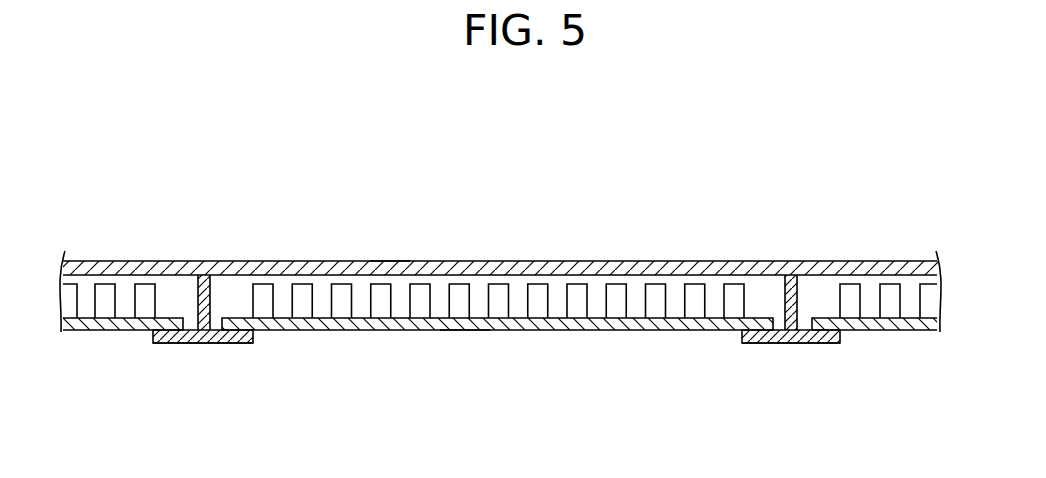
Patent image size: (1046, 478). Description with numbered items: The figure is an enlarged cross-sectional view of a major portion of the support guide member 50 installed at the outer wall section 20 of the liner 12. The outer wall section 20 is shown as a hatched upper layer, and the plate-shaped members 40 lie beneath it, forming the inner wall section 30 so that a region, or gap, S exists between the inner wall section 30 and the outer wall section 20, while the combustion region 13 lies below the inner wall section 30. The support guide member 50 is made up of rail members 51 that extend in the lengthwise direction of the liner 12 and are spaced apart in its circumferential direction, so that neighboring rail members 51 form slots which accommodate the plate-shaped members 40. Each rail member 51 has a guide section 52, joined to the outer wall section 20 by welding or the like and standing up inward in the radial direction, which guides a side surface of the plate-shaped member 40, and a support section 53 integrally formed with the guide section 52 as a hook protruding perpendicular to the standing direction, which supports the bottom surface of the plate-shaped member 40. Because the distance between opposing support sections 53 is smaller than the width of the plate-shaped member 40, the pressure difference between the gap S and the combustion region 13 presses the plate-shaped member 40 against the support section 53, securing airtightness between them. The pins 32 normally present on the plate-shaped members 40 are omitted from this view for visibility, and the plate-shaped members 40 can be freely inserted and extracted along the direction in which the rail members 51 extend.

The liner 12 is at (389, 250).
The combustion region 13 is at (480, 396).
The region (gap) S is at (479, 282).
The outer wall section 20 is at (535, 250).
The inner wall section 30 is at (497, 314).
The pin 32 is at (657, 285).
The plate-shaped member 40 is at (88, 331).
The support guide member 50 is at (496, 314).
The rail member 51 is at (203, 344).
The guide section 52 is at (222, 297).
The support section 53 is at (264, 340).